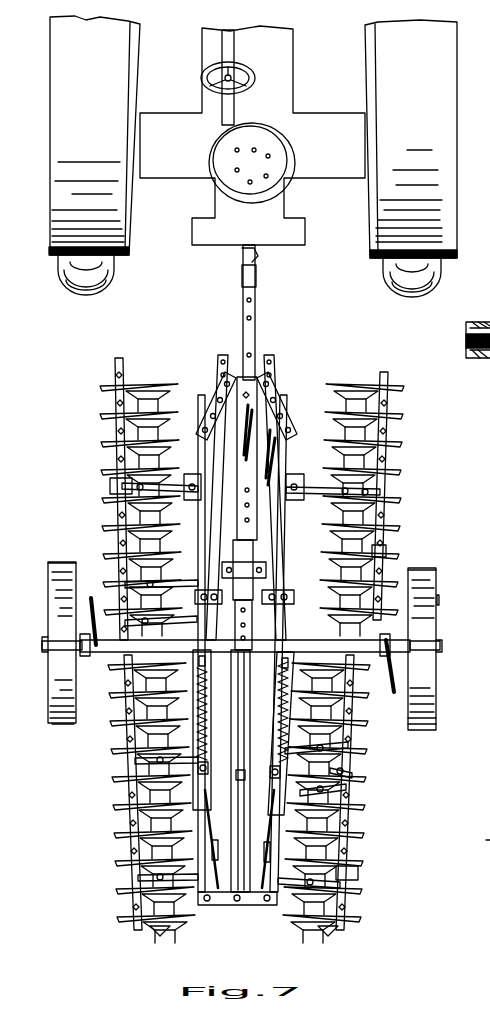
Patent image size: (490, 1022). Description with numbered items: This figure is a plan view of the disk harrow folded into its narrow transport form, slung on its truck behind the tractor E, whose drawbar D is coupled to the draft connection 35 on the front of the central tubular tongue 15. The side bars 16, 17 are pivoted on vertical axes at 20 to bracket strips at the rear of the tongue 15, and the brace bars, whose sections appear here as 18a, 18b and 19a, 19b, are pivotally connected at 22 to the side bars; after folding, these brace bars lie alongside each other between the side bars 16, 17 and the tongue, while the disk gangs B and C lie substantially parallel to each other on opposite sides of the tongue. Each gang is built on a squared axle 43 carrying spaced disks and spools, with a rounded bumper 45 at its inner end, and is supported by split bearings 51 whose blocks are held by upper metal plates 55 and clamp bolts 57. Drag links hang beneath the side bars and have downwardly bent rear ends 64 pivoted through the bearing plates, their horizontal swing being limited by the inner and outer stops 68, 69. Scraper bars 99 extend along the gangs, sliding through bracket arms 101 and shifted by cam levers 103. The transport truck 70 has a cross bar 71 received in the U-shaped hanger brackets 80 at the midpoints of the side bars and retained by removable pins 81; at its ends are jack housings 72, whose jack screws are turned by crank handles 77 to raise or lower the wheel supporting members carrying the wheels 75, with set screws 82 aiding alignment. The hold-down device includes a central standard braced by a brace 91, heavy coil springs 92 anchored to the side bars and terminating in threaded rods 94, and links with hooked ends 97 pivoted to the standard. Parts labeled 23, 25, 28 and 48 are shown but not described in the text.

The drawbar D is at (240, 253).
The tractor E is at (372, 258).
The draft connection 35 is at (243, 272).
The left upright frame member 18a is at (228, 352).
The right upright frame member 19a is at (278, 352).
The left inclined brace 18b is at (203, 405).
The right inclined brace 19b is at (292, 434).
The bolt holes in braces 28 is at (221, 392).
The side bar 16 is at (200, 480).
The side bar 17 is at (296, 482).
The scraper bar 99 is at (118, 360).
The bracket arm 101 is at (112, 482).
The bearing 51 is at (112, 488).
The downwardly bent end of drag link 64 is at (386, 491).
The cam lever 103 is at (386, 550).
The center frame block 23 is at (270, 562).
The cross plate 25 is at (268, 572).
The pivotal connection 22 is at (210, 604).
The outer stop 69 is at (192, 585).
The inner stop 68 is at (195, 618).
The cross bar 71 is at (268, 652).
The jack housing 72 is at (80, 656).
The wheel 75 is at (48, 712).
The transport truck 70 is at (445, 602).
The set screw 82 is at (78, 640).
The crank handle 77 is at (88, 604).
The removable pin 81 is at (204, 652).
The hanger bracket 80 is at (296, 658).
The coil spring 92 is at (208, 728).
The threaded rod 94 is at (212, 770).
The brace 91 is at (228, 808).
The hooked end 97 is at (230, 848).
The tongue 15 is at (250, 706).
The pivot 20 is at (266, 906).
The disk gang B is at (108, 806).
The disk gang C is at (372, 808).
The clamp bolt 57 is at (134, 878).
The upper metal plate 55 is at (350, 883).
The bumper 45 is at (148, 932).
The squared axle 43 is at (466, 336).
The spacer 48 is at (480, 843).